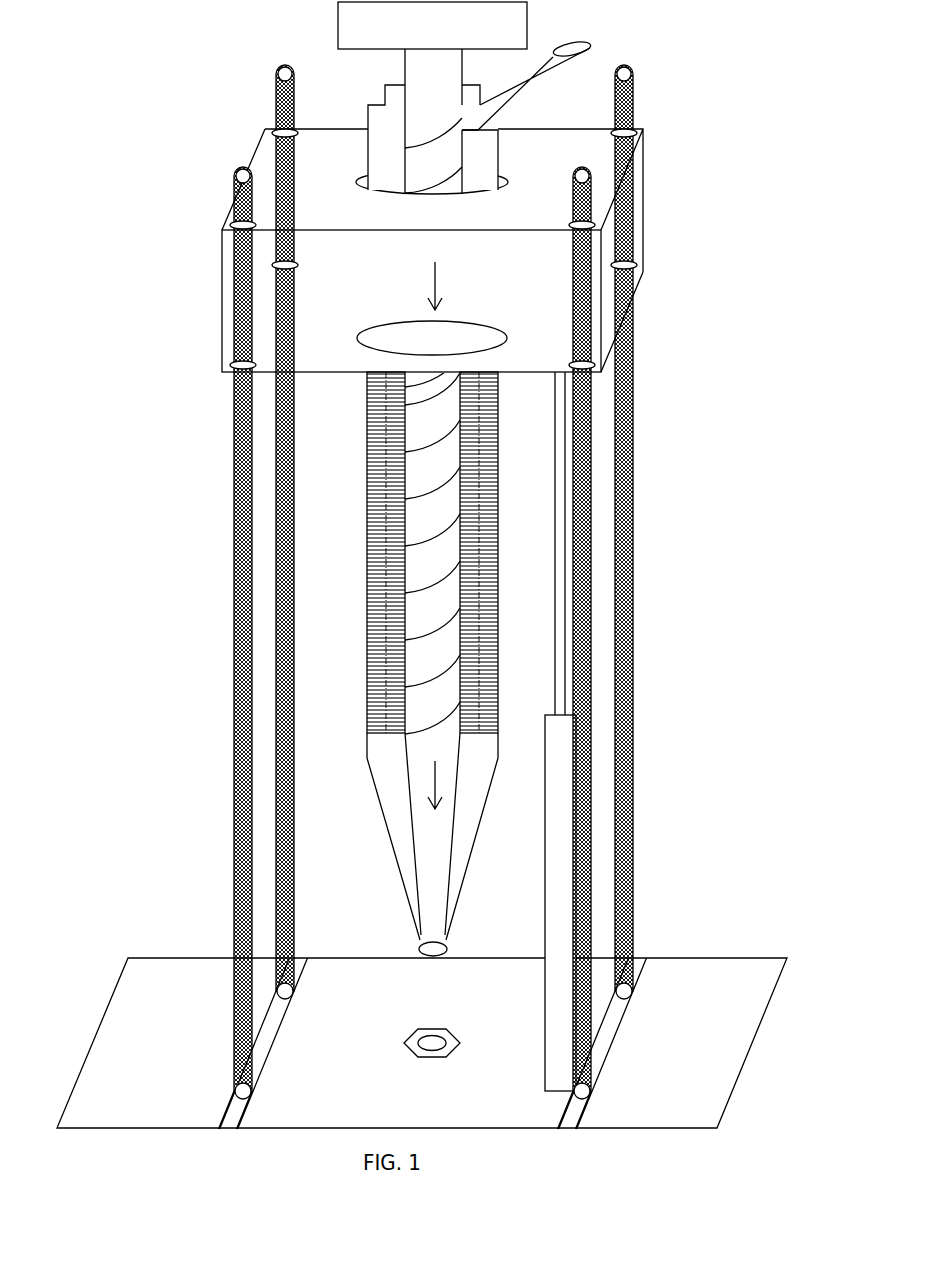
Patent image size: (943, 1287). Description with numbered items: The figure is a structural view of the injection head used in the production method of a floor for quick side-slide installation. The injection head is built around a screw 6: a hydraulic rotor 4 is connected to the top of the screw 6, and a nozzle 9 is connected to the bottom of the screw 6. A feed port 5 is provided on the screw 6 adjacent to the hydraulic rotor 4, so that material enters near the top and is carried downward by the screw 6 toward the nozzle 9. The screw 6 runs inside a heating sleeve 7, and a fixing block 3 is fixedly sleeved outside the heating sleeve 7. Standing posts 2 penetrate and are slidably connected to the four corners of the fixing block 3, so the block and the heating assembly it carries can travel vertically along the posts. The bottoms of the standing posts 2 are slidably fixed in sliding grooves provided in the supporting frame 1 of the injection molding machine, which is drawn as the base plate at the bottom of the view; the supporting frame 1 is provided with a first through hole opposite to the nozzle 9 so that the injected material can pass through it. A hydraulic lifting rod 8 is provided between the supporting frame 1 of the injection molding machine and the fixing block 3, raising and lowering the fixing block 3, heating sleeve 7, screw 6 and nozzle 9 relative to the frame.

The supporting frame of injection molding machine 1 is at (181, 1009).
The standing post 2 is at (245, 622).
The fixing block 3 is at (265, 162).
The hydraulic rotor 4 is at (477, 20).
The feed port 5 is at (550, 70).
The screw 6 is at (423, 423).
The heating sleeve 7 is at (382, 503).
The hydraulic lifting rod 8 is at (558, 805).
The nozzle 9 is at (432, 930).